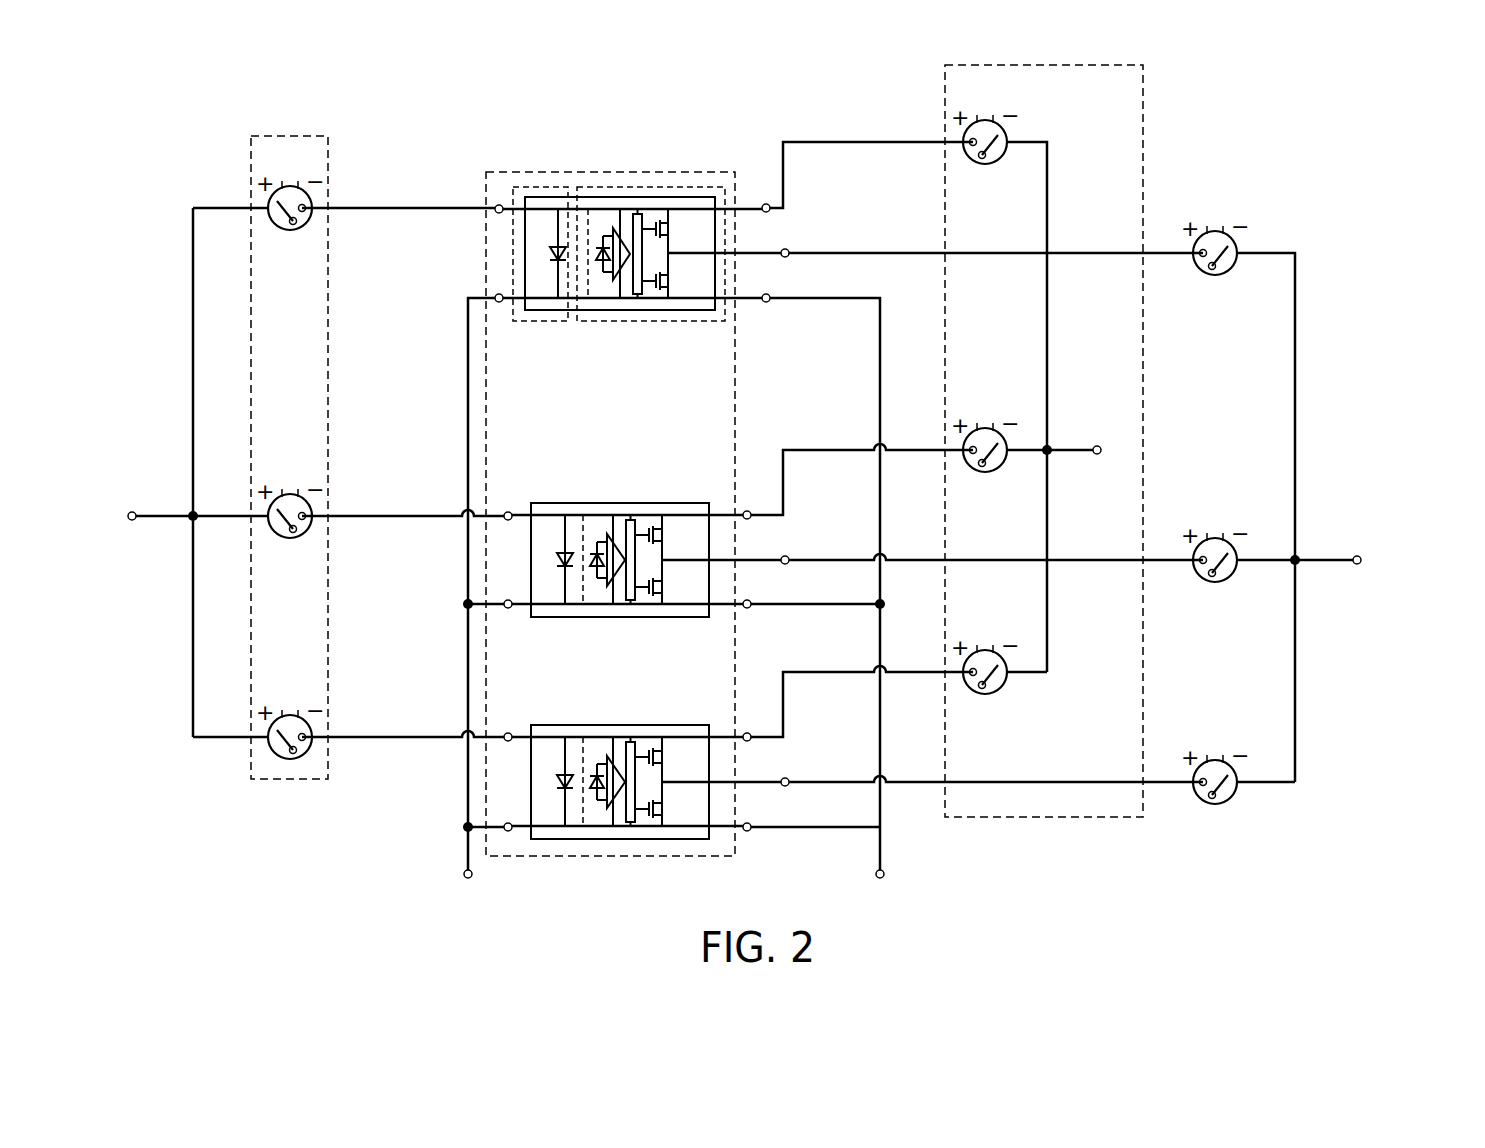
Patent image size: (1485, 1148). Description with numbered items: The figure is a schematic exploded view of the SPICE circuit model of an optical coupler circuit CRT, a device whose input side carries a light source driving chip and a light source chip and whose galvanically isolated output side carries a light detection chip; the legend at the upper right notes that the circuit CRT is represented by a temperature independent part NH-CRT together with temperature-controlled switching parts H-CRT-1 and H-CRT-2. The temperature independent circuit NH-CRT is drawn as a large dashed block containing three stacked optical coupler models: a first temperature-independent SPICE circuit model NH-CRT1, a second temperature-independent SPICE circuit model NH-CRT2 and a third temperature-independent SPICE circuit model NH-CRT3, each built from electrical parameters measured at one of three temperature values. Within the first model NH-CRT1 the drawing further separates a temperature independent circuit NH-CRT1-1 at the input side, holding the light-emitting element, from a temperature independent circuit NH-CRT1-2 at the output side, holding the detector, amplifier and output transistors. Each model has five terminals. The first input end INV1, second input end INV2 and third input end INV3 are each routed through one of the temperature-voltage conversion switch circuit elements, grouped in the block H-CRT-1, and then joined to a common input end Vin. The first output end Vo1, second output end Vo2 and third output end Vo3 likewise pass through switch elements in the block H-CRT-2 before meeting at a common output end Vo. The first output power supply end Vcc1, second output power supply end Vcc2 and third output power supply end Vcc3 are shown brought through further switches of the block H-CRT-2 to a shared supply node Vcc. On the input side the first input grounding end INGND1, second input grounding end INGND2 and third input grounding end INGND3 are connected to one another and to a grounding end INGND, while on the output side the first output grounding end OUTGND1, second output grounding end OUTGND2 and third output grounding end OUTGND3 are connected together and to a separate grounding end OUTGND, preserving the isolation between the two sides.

The optical coupler circuit CRT is at (1358, 45).
The first heating circuit (input side temperature control) H-CRT-1 is at (300, 136).
The second heating circuit (output side temperature control) H-CRT-2 is at (1043, 818).
The temperature independent circuit NH-CRT is at (622, 172).
The first temperature-independent SPICE circuit model NH-CRT1 is at (612, 209).
The temperature independent circuit at input side NH-CRT1-1 is at (540, 186).
The temperature independent circuit at output side NH-CRT1-2 is at (680, 186).
The second temperature-independent SPICE circuit model NH-CRT2 is at (620, 503).
The third temperature-independent SPICE circuit model NH-CRT3 is at (566, 726).
The input end Vin is at (132, 511).
The first input end INV1 is at (498, 213).
The second input end INV2 is at (506, 519).
The third input end INV3 is at (507, 734).
The first input grounding end INGND1 is at (497, 296).
The second input grounding end INGND2 is at (507, 608).
The third input grounding end INGND3 is at (507, 824).
The grounding end INGND is at (468, 879).
The first output power supply end Vcc1 is at (766, 203).
The second output power supply end Vcc2 is at (748, 511).
The third output power supply end Vcc3 is at (746, 733).
The supply voltage terminal Vcc is at (1097, 445).
The first output end Vo1 is at (788, 251).
The second output end Vo2 is at (787, 556).
The third output end Vo3 is at (787, 778).
The output end Vo is at (1357, 555).
The first output grounding end OUTGND1 is at (769, 296).
The second output grounding end OUTGND2 is at (748, 608).
The third output grounding end OUTGND3 is at (795, 865).
The grounding end OUTGND is at (880, 879).